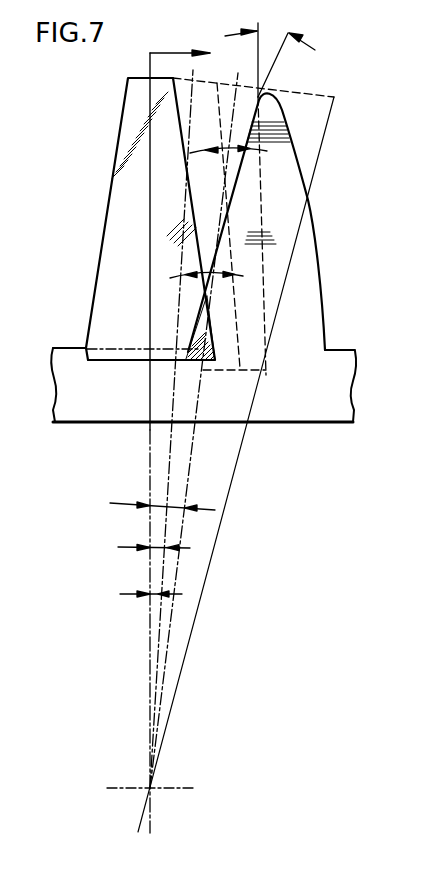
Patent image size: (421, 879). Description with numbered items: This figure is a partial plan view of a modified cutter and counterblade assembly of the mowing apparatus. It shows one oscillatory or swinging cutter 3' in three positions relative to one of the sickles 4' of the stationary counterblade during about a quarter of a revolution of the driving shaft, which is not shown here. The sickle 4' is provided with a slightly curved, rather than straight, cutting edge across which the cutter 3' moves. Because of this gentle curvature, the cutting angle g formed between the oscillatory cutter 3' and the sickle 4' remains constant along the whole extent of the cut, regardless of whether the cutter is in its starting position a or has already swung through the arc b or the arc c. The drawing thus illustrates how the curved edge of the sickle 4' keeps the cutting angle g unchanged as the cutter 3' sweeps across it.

The oscillatory cutter 3' is at (138, 219).
The sickle 4' is at (276, 222).
The cutting angle g is at (218, 268).
The starting position a is at (153, 590).
The arc b is at (158, 543).
The arc c is at (157, 498).